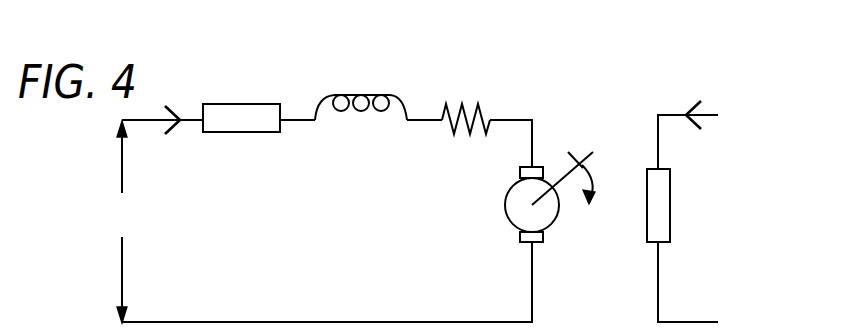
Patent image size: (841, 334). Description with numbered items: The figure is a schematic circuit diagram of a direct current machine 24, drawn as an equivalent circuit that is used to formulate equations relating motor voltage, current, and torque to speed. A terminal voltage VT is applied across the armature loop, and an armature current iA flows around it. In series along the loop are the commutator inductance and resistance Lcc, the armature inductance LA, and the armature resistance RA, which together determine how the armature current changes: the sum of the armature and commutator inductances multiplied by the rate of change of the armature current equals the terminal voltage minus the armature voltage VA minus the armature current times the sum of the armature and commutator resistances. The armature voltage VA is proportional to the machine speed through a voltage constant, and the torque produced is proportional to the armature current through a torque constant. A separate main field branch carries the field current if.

The direct current machine 24 is at (722, 88).
The terminal voltage VT is at (125, 222).
The armature current iA is at (170, 139).
The commutator inductance Lcc is at (238, 129).
The armature inductance LA is at (361, 135).
The armature resistance RA is at (466, 132).
The armature voltage VA is at (543, 223).
The field current if is at (696, 211).